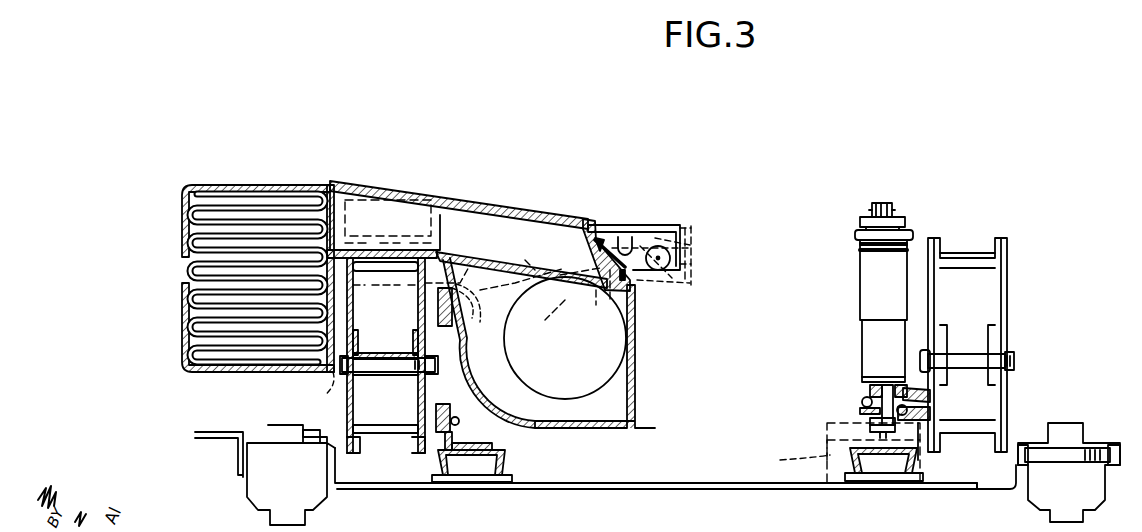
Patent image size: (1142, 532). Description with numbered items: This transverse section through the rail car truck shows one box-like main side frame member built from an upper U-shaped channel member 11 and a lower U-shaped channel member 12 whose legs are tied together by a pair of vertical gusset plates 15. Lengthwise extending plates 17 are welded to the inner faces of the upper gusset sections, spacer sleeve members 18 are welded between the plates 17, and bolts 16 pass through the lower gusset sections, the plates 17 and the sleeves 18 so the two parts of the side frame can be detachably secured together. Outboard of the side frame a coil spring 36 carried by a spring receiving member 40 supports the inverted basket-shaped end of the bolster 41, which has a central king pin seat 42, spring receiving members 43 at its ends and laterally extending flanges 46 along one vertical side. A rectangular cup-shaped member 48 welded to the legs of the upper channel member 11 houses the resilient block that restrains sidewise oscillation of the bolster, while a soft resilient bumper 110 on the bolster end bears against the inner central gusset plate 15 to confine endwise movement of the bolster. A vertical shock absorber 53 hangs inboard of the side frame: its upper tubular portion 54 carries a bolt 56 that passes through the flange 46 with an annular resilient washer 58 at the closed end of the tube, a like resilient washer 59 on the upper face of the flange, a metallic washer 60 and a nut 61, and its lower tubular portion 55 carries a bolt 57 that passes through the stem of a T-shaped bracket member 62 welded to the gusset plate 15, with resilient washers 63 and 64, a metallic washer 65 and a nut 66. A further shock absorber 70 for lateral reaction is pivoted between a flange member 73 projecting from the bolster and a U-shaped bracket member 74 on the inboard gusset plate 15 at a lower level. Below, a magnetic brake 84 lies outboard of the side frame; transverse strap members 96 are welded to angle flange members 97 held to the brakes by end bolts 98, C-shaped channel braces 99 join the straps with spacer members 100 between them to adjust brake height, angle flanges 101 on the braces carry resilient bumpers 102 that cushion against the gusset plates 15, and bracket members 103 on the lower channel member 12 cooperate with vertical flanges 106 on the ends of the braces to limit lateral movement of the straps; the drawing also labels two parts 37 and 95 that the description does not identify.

The upper U-shaped channel member 11 is at (390, 271).
The lower U-shaped channel member 12 is at (387, 438).
The gusset plates 15 is at (418, 405).
The bolts 16 is at (440, 365).
The lengthwise extending plates 17 is at (412, 340).
The spacer sleeve members 18 is at (389, 378).
The coil springs 36 is at (192, 258).
The housing wall 37 is at (324, 387).
The spring receiving members 40 is at (182, 368).
The bolster 41 is at (500, 212).
The king pin seat 42 is at (598, 228).
The spring receiving members 43 is at (186, 200).
The laterally extending flanges 46 is at (858, 233).
The rectangular cup-shaped members 48 is at (420, 205).
The vertical shock absorber 53 is at (843, 321).
The upper tubular portion 54 is at (882, 290).
The lower tubular portion 55 is at (873, 356).
The bolt 56 is at (889, 204).
The bolt 57 is at (862, 404).
The annular resilient washer 58 is at (862, 243).
The annular resilient washer 59 is at (913, 234).
The metallic washer 60 is at (903, 222).
The nut 61 is at (873, 208).
The T-shaped bracket member 62 is at (930, 396).
The annular resilient washer 63 is at (870, 391).
The annular resilient washer 64 is at (862, 412).
The metallic washer 65 is at (912, 412).
The nut 66 is at (872, 428).
The shock absorber 70 is at (546, 300).
The flange member 73 is at (688, 228).
The U-shaped bracket member 74 is at (440, 250).
The magnetic brakes 84 is at (262, 510).
The base 95 is at (770, 528).
The strap members 96 is at (635, 486).
The angle flange members 97 is at (1009, 487).
The end bolts 98 is at (1078, 460).
The C-shaped channel braces 99 is at (505, 460).
The spacer members 100 is at (472, 482).
The angle flanges 101 is at (458, 445).
The resilient bumpers 102 is at (447, 404).
The bracket members 103 is at (828, 448).
The vertical flanges 106 is at (835, 462).
The soft resilient bumpers 110 is at (455, 316).